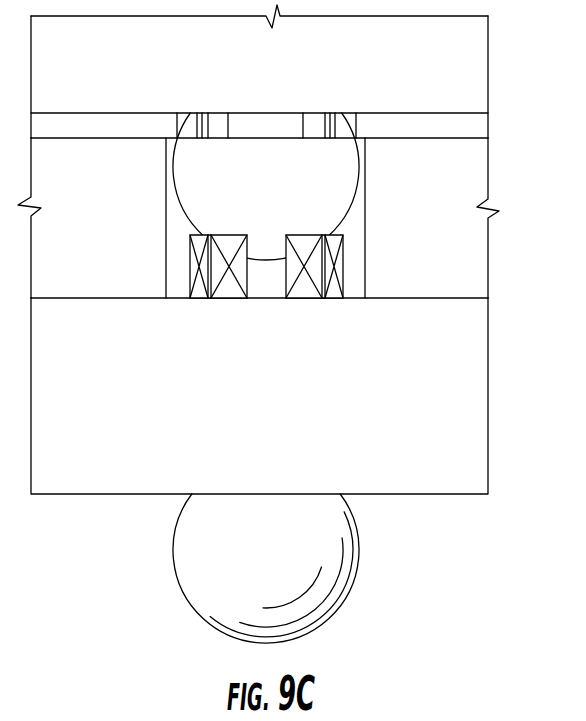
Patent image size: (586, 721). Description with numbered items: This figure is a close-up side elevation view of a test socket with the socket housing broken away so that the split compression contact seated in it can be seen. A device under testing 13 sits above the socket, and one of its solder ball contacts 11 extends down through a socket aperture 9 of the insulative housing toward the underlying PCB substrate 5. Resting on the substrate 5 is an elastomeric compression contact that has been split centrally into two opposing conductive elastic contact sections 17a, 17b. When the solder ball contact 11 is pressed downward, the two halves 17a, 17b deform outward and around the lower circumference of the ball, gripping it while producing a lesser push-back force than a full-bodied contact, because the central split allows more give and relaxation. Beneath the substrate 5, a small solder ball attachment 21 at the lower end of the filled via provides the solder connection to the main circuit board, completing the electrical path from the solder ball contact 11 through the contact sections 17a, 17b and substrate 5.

The device under testing 13 is at (464, 67).
The solder ball contact 11 is at (332, 195).
The socket aperture 9 is at (358, 217).
The conductive elastic contact section 17a is at (208, 269).
The conductive elastic contact section 17b is at (324, 267).
The substrate 5 is at (462, 375).
The solder ball attachment 21 is at (328, 553).